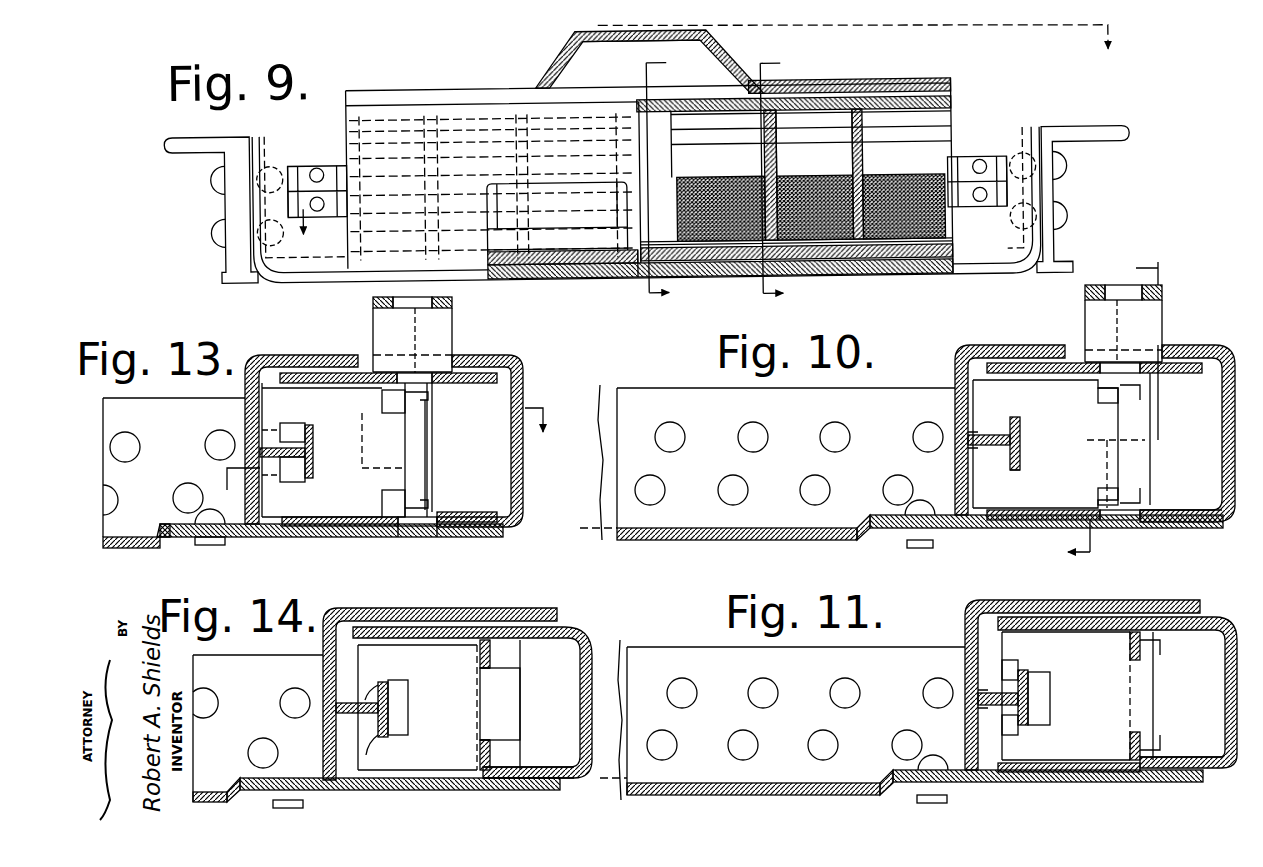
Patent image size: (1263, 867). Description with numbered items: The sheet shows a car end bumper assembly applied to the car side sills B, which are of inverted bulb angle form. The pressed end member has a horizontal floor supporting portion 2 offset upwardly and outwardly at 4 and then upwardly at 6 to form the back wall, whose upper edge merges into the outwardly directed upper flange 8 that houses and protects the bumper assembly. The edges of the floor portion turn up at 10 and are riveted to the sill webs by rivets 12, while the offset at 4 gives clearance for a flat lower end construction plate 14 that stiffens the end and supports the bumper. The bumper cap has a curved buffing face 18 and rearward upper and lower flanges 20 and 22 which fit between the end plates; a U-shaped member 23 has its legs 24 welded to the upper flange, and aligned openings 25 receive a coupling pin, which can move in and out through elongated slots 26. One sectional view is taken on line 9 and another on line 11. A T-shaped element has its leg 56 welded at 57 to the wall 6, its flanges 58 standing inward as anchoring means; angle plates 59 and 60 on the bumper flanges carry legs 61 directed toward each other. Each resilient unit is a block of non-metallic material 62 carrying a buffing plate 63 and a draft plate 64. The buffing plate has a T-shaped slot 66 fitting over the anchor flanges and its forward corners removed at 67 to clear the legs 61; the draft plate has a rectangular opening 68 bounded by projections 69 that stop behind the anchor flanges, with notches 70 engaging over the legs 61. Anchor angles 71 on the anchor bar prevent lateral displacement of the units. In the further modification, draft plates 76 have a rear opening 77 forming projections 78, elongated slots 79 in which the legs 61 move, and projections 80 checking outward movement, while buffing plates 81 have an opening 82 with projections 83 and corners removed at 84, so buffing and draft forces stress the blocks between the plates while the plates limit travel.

In FIG. 13, the horizontal floor supporting portion 2 is at (103, 543).
In FIG. 10, the horizontal floor supporting portion 2 is at (790, 528).
In FIG. 14, the horizontal floor supporting portion 2 is at (197, 800).
In FIG. 11, the horizontal floor supporting portion 2 is at (790, 785).
In FIG. 13, the upwardly offset portion 4 is at (155, 530).
In FIG. 10, the upwardly offset portion 4 is at (870, 518).
In FIG. 14, the upwardly offset portion 4 is at (240, 790).
In FIG. 11, the upwardly offset portion 4 is at (880, 775).
In FIG. 9, the back wall 6 is at (1014, 140).
In FIG. 13, the back wall 6 is at (245, 386).
In FIG. 10, the back wall 6 is at (955, 400).
In FIG. 14, the back wall 6 is at (323, 666).
In FIG. 11, the back wall 6 is at (965, 658).
In FIG. 9, the upper flange 8 is at (856, 88).
In FIG. 13, the upper flange 8 is at (313, 357).
In FIG. 10, the upper flange 8 is at (1030, 345).
In FIG. 14, the upper flange 8 is at (460, 608).
In FIG. 11, the upper flange 8 is at (1082, 600).
In FIG. 10, the section line 9— 9 is at (1102, 411).
In FIG. 9, the upwardly directed edge portion 10 is at (272, 150).
In FIG. 13, the upwardly directed edge portion 10 is at (103, 418).
In FIG. 10, the upwardly directed edge portion 10 is at (693, 400).
In FIG. 14, the upwardly directed edge portion 10 is at (258, 660).
In FIG. 11, the upwardly directed edge portion 10 is at (888, 655).
In FIG. 9, the section line 11— 11 is at (785, 183).
In FIG. 9, the rivets 12 is at (1068, 178).
In FIG. 13, the rivets 12 is at (183, 490).
In FIG. 10, the rivets 12 is at (728, 478).
In FIG. 14, the rivets 12 is at (262, 740).
In FIG. 11, the rivets 12 is at (905, 745).
In FIG. 9, the lower end construction plate 14 is at (583, 284).
In FIG. 13, the lower end construction plate 14 is at (318, 538).
In FIG. 10, the lower end construction plate 14 is at (985, 540).
In FIG. 14, the lower end construction plate 14 is at (440, 790).
In FIG. 11, the lower end construction plate 14 is at (1080, 782).
In FIG. 13, the buffing face 18 is at (523, 462).
In FIG. 10, the buffing face 18 is at (1222, 450).
In FIG. 14, the buffing face 18 is at (580, 700).
In FIG. 11, the buffing face 18 is at (1225, 695).
In FIG. 9, the upper flange 20 is at (952, 109).
In FIG. 13, the upper flange 20 is at (500, 362).
In FIG. 10, the upper flange 20 is at (1205, 355).
In FIG. 14, the upper flange 20 is at (560, 627).
In FIG. 11, the upper flange 20 is at (1205, 617).
In FIG. 9, the lower flange 22 is at (952, 262).
In FIG. 13, the lower flange 22 is at (508, 530).
In FIG. 10, the lower flange 22 is at (1210, 535).
In FIG. 14, the lower flange 22 is at (567, 790).
In FIG. 11, the lower flange 22 is at (1220, 775).
In FIG. 9, the U-shaped member 23 is at (622, 48).
In FIG. 13, the U-shaped member 23 is at (452, 303).
In FIG. 10, the U-shaped member 23 is at (1093, 285).
In FIG. 9, the downwardly directed legs 24 is at (562, 62).
In FIG. 13, the downwardly directed legs 24 is at (452, 330).
In FIG. 10, the downwardly directed legs 24 is at (1162, 320).
In FIG. 13, the aligned openings 25 is at (415, 372).
In FIG. 10, the aligned openings 25 is at (1117, 362).
In FIG. 9, the elongated slots 26 is at (648, 298).
In FIG. 13, the elongated slots 26 is at (405, 530).
In FIG. 10, the elongated slots 26 is at (1118, 530).
In FIG. 13, the leg of T-shaped element 56 is at (305, 478).
In FIG. 10, the leg of T-shaped element 56 is at (987, 435).
In FIG. 14, the leg of T-shaped element 56 is at (325, 712).
In FIG. 11, the leg of T-shaped element 56 is at (975, 703).
In FIG. 10, the weld 57 is at (968, 445).
In FIG. 11, the weld 57 is at (986, 690).
In FIG. 9, the flanges of T-shaped element 58 is at (293, 175).
In FIG. 13, the flanges of T-shaped element 58 is at (313, 445).
In FIG. 10, the flanges of T-shaped element 58 is at (1020, 425).
In FIG. 14, the flanges of T-shaped element 58 is at (392, 728).
In FIG. 11, the flanges of T-shaped element 58 is at (1030, 682).
In FIG. 9, the upper angle plate 59 is at (822, 152).
In FIG. 13, the upper angle plate 59 is at (466, 447).
In FIG. 10, the upper angle plate 59 is at (1179, 392).
In FIG. 14, the upper angle plate 59 is at (541, 705).
In FIG. 11, the upper angle plate 59 is at (1186, 696).
In FIG. 9, the lower angle plate 60 is at (613, 283).
In FIG. 13, the lower angle plate 60 is at (475, 512).
In FIG. 10, the lower angle plate 60 is at (1175, 507).
In FIG. 14, the lower angle plate 60 is at (550, 770).
In FIG. 11, the lower angle plate 60 is at (1225, 745).
In FIG. 9, the legs of angle plates 61 is at (722, 150).
In FIG. 13, the legs of angle plates 61 is at (428, 395).
In FIG. 10, the legs of angle plates 61 is at (1128, 388).
In FIG. 14, the legs of angle plates 61 is at (490, 655).
In FIG. 11, the legs of angle plates 61 is at (1145, 648).
In FIG. 9, the block of non-metallic material 62 is at (572, 200).
In FIG. 9, the buffing plate 63 is at (605, 234).
In FIG. 10, the buffing plate 63 is at (1059, 444).
In FIG. 9, the draft plate 64 is at (527, 244).
In FIG. 11, the draft plate 64 is at (1066, 696).
In FIG. 10, the T-shaped slot 66 is at (1015, 470).
In FIG. 10, the removed forward corners 67 is at (1098, 392).
In FIG. 11, the rectangular opening 68 is at (1040, 667).
In FIG. 11, the short projections 69 is at (1012, 668).
In FIG. 11, the notches 70 is at (1160, 660).
In FIG. 9, the anchor angles 71 is at (320, 167).
In FIG. 13, the draft plate 76 is at (383, 440).
In FIG. 13, the rectangular opening 77 is at (300, 423).
In FIG. 13, the projections 78 is at (262, 437).
In FIG. 13, the elongated slot 79 is at (382, 400).
In FIG. 13, the projections 80 is at (426, 405).
In FIG. 14, the buffing plate 81 is at (479, 704).
In FIG. 14, the rectangular opening 82 is at (405, 685).
In FIG. 14, the projections 83 is at (368, 690).
In FIG. 14, the removed forward corners 84 is at (468, 713).
In FIG. 9, the car side sills B is at (212, 150).
In FIG. 10, the car side sills B is at (606, 452).
In FIG. 11, the car side sills B is at (624, 708).